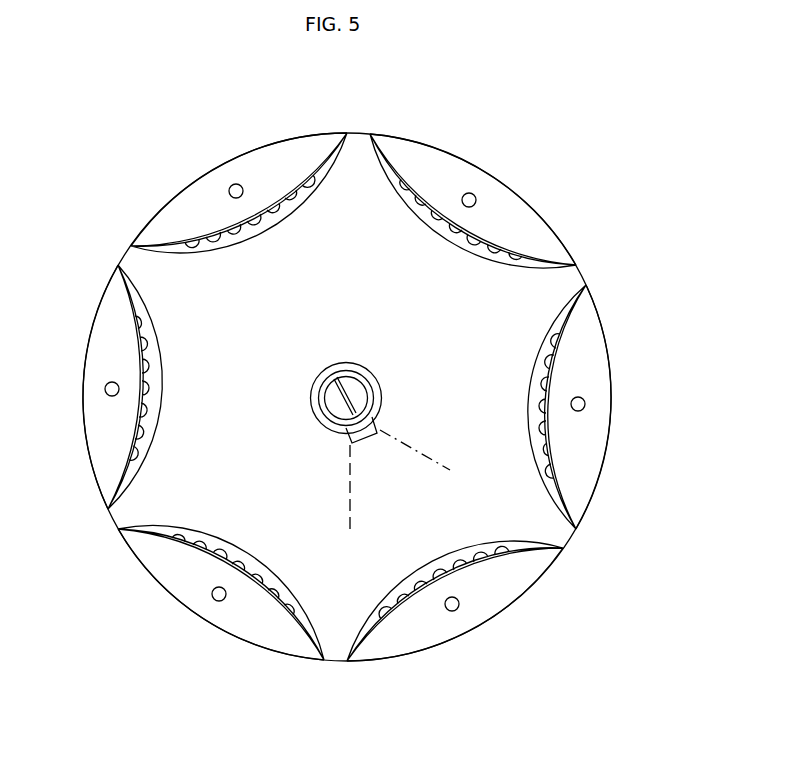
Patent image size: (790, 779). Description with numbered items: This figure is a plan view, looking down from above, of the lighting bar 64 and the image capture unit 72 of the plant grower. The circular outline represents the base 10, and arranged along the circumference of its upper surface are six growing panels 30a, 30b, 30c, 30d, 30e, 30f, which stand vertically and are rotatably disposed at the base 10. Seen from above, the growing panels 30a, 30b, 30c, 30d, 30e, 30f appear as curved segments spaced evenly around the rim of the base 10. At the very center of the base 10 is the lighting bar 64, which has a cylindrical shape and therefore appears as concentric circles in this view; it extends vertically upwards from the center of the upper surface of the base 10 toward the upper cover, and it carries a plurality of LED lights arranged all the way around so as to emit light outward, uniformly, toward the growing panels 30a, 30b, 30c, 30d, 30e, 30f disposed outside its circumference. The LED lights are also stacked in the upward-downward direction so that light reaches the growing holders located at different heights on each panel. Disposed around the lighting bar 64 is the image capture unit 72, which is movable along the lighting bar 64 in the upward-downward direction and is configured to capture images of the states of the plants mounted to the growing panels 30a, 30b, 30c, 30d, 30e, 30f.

The base 10 is at (502, 457).
The growing panel 30a is at (185, 578).
The growing panel 30b is at (498, 583).
The growing panel 30c is at (585, 368).
The growing panel 30d is at (522, 215).
The growing panel 30e is at (208, 202).
The growing panel 30f is at (97, 345).
The lighting bar 64 is at (338, 363).
The image capture unit 72 is at (372, 418).